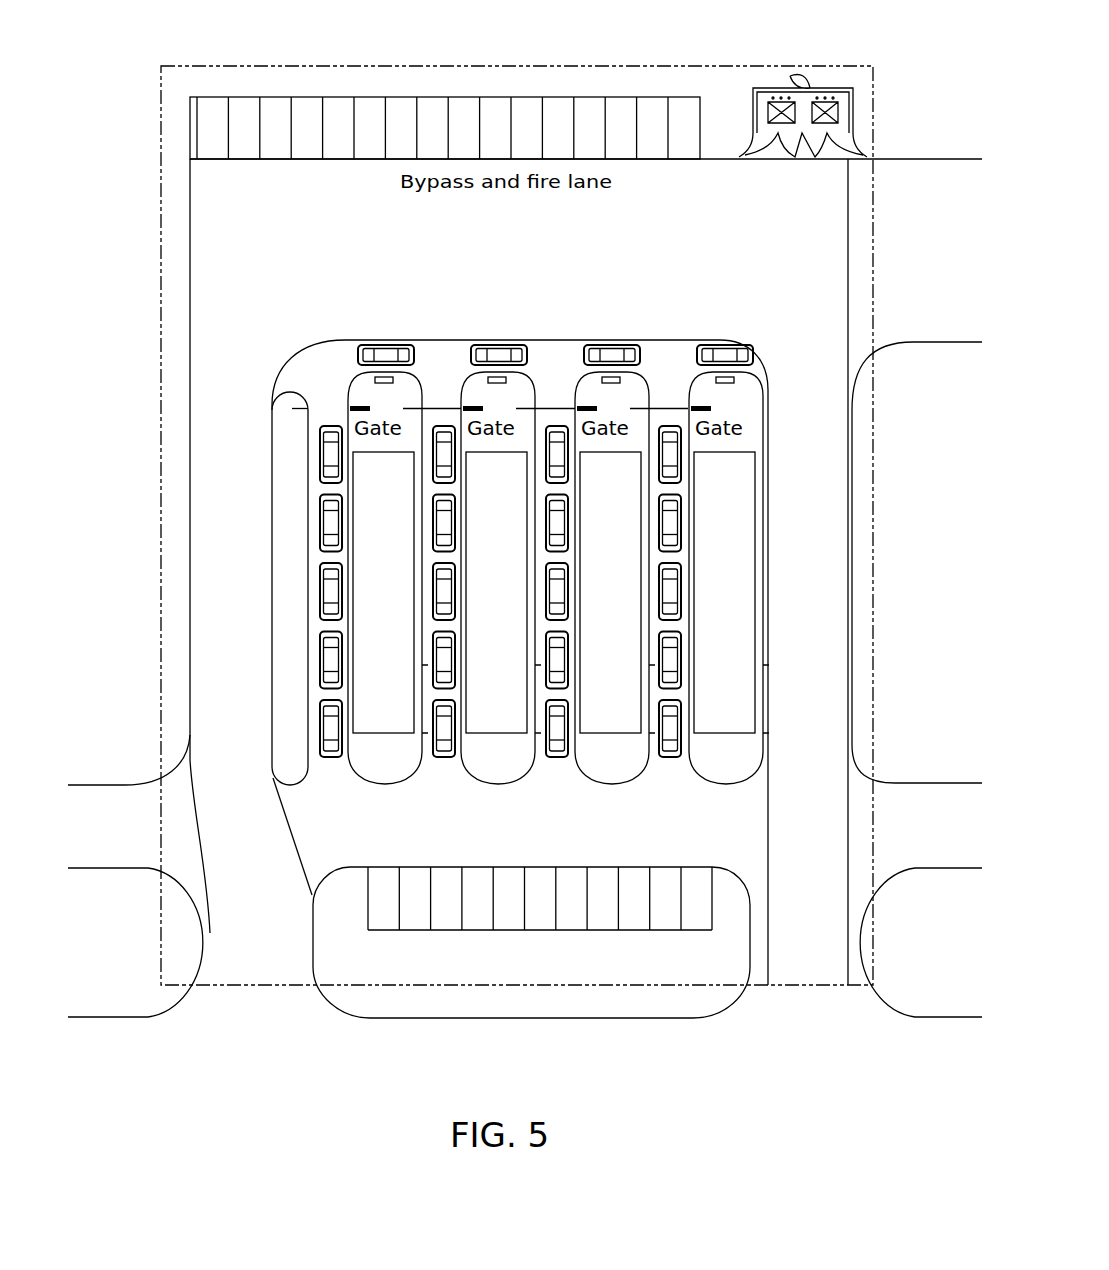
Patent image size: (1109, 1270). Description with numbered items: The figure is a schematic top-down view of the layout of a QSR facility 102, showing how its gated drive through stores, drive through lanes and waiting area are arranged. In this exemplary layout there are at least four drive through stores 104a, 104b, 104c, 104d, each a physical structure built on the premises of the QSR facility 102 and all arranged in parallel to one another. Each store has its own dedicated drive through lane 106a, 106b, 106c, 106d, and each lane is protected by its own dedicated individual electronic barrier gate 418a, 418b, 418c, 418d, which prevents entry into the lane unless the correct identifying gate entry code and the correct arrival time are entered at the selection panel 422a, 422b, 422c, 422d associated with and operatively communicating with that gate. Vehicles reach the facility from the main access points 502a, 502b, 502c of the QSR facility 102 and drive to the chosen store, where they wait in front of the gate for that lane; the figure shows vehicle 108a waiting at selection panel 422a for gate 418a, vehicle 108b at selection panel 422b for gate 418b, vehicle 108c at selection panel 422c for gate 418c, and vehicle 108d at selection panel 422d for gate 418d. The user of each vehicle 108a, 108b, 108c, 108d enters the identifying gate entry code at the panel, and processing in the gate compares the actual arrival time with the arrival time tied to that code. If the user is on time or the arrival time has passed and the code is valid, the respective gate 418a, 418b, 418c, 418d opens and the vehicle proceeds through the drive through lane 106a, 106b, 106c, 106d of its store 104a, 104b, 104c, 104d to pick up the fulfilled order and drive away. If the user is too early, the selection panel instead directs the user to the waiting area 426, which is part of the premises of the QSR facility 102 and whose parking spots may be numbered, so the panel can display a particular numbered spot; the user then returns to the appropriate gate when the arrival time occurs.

The QSR facility 102 is at (866, 28).
The drive through store 104a is at (385, 746).
The drive through store 104b is at (504, 746).
The drive through store 104c is at (612, 746).
The drive through store 104d is at (722, 746).
The drive through lane 106a is at (332, 767).
The drive through lane 106b is at (447, 767).
The drive through lane 106c is at (558, 767).
The drive through lane 106d is at (670, 767).
The vehicle 108a is at (381, 341).
The vehicle 108b is at (496, 341).
The vehicle 108c is at (609, 341).
The vehicle 108d is at (726, 341).
The electronic barrier gate 418a is at (313, 398).
The electronic barrier gate 418b is at (447, 399).
The electronic barrier gate 418c is at (560, 399).
The electronic barrier gate 418d is at (671, 399).
The selection panel 422a is at (355, 375).
The selection panel 422b is at (505, 366).
The selection panel 422c is at (614, 366).
The selection panel 422d is at (745, 378).
The waiting area 426 is at (560, 122).
The main access point 502a is at (874, 245).
The main access point 502b is at (874, 843).
The main access point 502c is at (160, 843).